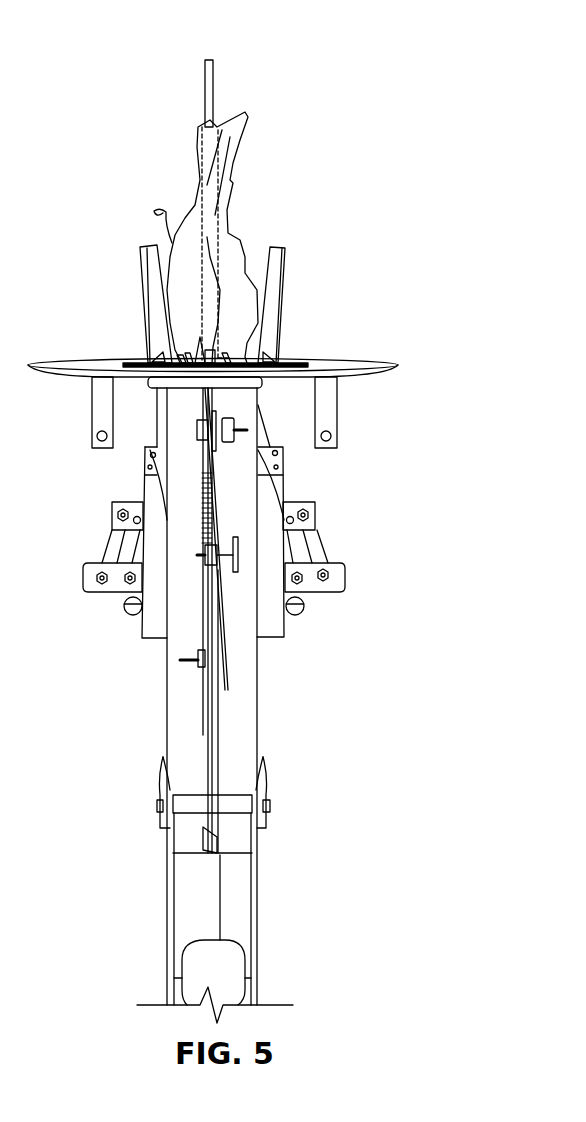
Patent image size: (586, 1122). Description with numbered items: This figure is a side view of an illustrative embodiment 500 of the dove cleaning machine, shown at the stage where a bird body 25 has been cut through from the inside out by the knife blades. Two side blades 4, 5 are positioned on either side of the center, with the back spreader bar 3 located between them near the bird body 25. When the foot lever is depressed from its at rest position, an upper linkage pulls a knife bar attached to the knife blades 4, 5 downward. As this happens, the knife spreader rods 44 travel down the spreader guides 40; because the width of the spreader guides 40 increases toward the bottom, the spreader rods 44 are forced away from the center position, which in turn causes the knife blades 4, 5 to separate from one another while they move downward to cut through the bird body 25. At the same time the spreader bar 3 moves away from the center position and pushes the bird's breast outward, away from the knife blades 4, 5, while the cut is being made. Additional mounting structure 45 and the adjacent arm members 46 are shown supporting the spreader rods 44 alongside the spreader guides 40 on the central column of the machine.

The assembly 500 is at (312, 66).
The bird body 25 is at (230, 233).
The back spreader bar 3 is at (213, 277).
The side blade 4 is at (157, 283).
The side blade 5 is at (270, 332).
The spreader guide 40 is at (153, 630).
The knife spreader rod 44 is at (123, 610).
The mounting plate 45 is at (288, 505).
The support arm 46 is at (317, 550).